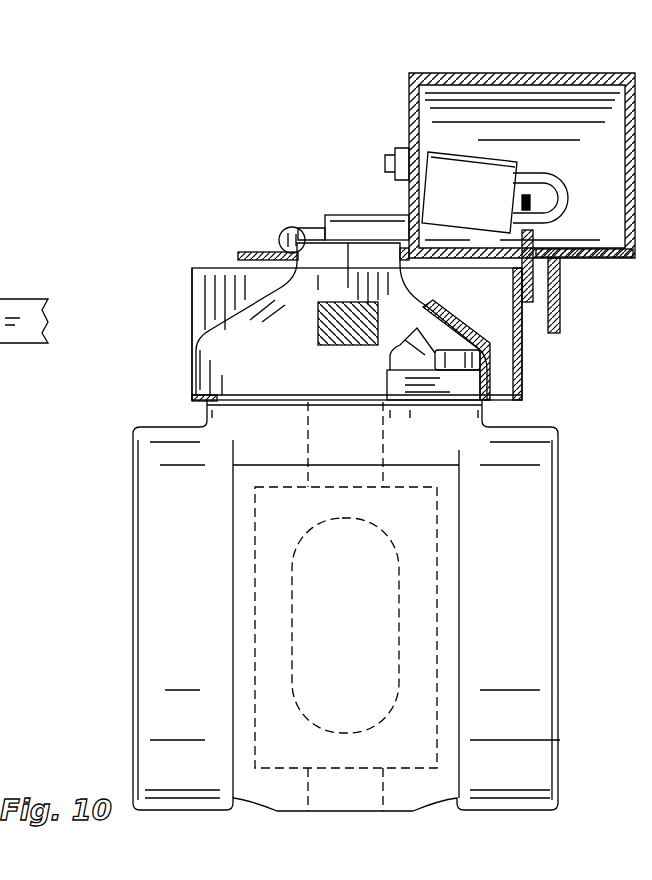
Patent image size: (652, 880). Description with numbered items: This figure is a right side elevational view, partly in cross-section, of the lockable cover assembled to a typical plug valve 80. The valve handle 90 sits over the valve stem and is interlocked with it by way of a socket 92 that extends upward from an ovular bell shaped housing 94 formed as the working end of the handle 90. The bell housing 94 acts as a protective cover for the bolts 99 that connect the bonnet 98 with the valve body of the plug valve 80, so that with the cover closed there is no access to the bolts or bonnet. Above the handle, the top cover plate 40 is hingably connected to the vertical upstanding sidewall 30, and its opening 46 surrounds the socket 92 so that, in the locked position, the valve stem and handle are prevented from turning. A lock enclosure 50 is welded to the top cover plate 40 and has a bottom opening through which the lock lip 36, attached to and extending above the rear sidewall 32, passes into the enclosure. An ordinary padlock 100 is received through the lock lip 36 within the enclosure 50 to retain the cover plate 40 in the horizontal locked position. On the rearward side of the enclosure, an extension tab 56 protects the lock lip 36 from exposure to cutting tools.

The vertical upstanding sidewall 30 is at (195, 337).
The rear sidewall 32 is at (523, 370).
The lock lip 36 is at (534, 281).
The top cover plate 40 is at (240, 254).
The rectangular opening 46 is at (282, 248).
The lock enclosure 50 is at (409, 73).
The extension tab 56 is at (560, 313).
The plug valve 80 is at (133, 462).
The valve handle 90 is at (340, 350).
The socket 92 is at (322, 258).
The bell shaped housing 94 is at (195, 313).
The bonnet 98 is at (497, 392).
The bolts 99 is at (430, 335).
The padlock 100 is at (484, 203).